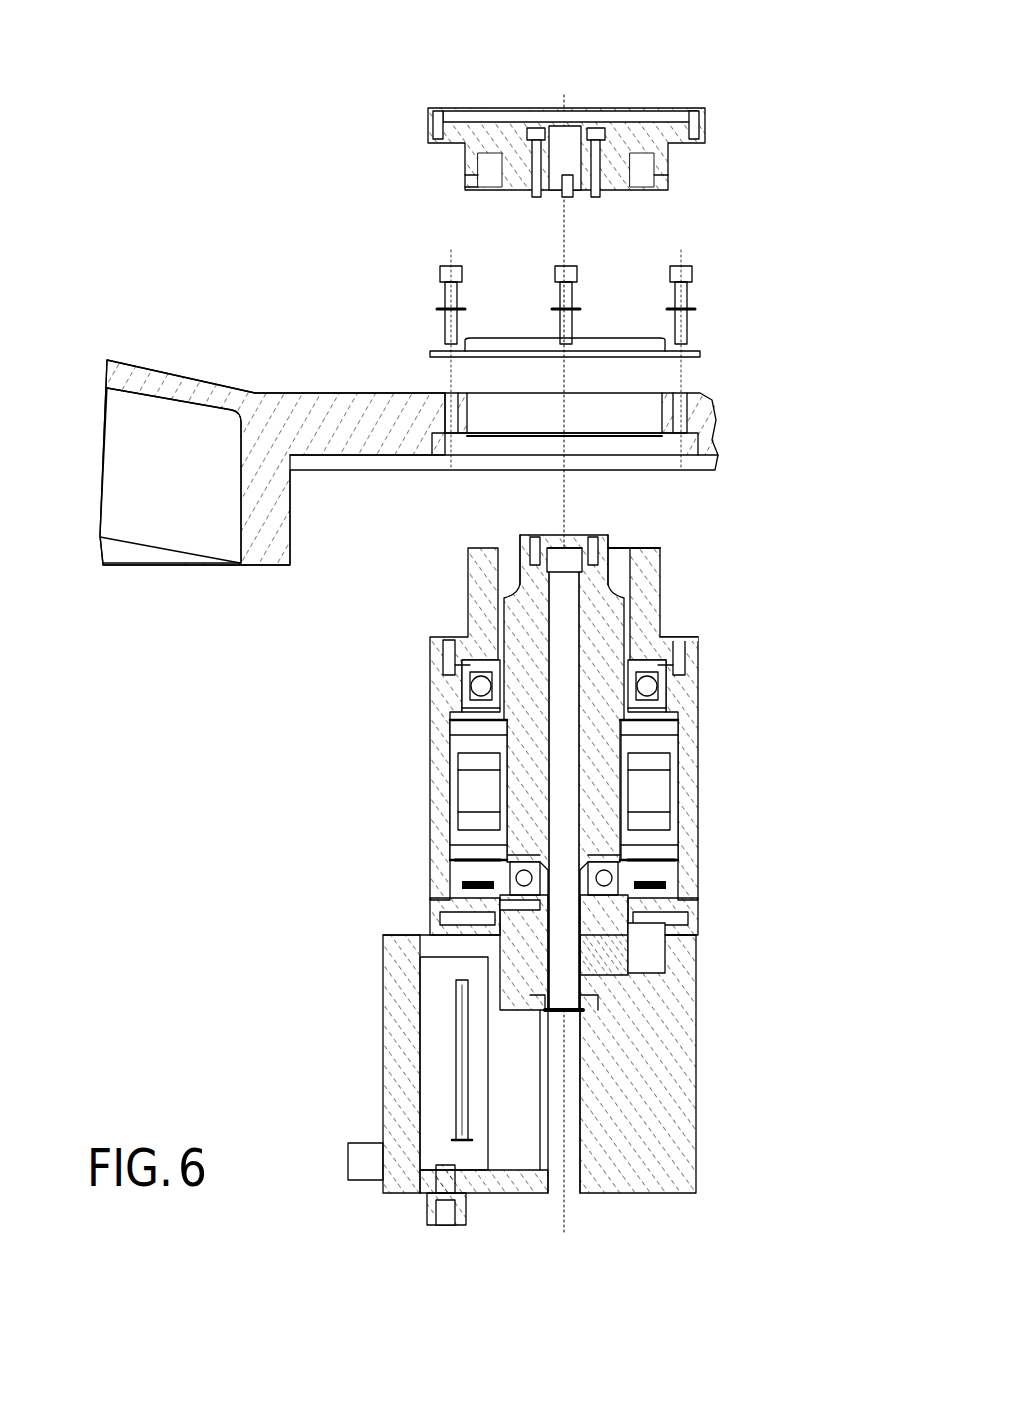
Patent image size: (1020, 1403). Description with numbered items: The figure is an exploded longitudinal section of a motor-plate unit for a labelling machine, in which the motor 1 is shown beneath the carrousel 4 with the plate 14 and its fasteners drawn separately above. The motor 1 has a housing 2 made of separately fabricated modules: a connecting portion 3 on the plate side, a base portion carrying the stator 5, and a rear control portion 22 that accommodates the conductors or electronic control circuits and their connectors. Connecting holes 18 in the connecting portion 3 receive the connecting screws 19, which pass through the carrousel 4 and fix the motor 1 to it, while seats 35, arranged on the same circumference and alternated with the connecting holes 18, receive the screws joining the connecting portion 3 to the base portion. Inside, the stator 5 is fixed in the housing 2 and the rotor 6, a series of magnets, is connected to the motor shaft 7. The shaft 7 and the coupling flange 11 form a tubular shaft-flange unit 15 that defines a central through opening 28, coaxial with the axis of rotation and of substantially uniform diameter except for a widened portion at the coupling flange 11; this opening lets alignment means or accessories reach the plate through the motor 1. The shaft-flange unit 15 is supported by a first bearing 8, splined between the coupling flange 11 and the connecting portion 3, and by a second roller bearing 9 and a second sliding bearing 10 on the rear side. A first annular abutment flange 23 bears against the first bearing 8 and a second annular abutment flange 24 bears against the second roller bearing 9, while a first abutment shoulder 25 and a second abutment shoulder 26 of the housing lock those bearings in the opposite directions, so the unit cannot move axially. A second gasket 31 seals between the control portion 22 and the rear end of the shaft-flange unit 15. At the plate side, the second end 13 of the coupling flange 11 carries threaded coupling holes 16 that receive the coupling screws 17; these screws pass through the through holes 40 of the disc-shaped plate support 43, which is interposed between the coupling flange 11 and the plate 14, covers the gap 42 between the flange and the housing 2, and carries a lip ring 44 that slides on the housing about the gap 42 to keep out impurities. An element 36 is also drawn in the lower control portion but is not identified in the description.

The motor 1 is at (696, 606).
The housing 2 is at (640, 846).
The connecting portion 3 is at (700, 680).
The carrousel 4 is at (302, 418).
The stator 5 is at (470, 800).
The rotor 6 is at (455, 770).
The motor shaft 7 is at (650, 760).
The first bearing 8 is at (481, 686).
The second roller bearing 9 is at (520, 876).
The second sliding bearing 10 is at (540, 935).
The coupling flange 11 is at (590, 525).
The second end 13 is at (620, 567).
The plate 14 is at (677, 133).
The shaft-flange unit 15 is at (598, 790).
The coupling holes 16 is at (535, 540).
The coupling screws 17 is at (535, 128).
The connecting holes 18 is at (686, 665).
The connecting screws 19 is at (448, 298).
The control portion 22 is at (680, 1065).
The first annular abutment flange 23 is at (655, 735).
The second annular abutment flange 24 is at (590, 857).
The first abutment shoulder 25 is at (655, 648).
The second abutment shoulder 26 is at (667, 897).
The through opening 28 is at (580, 769).
The second gasket 31 is at (545, 1005).
The seats 35 is at (437, 650).
The sensor 36 is at (460, 1045).
The through holes 40 is at (515, 170).
The gap 42 is at (660, 549).
The plate support 43 is at (622, 190).
The lip ring 44 is at (483, 180).